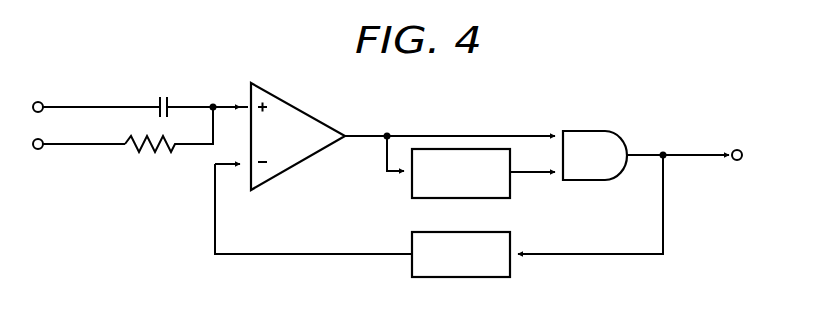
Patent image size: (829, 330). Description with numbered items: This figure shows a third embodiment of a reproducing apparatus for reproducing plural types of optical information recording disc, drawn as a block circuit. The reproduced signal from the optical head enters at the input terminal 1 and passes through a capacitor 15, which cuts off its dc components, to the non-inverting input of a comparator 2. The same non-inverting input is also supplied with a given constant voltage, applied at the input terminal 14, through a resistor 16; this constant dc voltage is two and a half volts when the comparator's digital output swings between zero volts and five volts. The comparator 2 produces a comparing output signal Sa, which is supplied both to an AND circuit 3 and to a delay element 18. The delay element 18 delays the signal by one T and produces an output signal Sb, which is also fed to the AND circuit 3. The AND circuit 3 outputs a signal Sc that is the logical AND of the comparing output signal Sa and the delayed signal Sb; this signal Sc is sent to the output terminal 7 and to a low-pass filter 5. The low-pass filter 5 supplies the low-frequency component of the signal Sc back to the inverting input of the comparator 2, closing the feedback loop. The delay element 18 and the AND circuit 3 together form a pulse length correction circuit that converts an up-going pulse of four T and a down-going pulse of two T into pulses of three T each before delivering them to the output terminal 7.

The input terminal 1 is at (38, 101).
The input terminal 14 is at (38, 150).
The capacitor 15 is at (163, 96).
The resistor 16 is at (152, 155).
The comparator 2 is at (300, 104).
The delay element 18 is at (412, 198).
The AND circuit 3 is at (577, 130).
The low-pass filter 5 is at (501, 278).
The output terminal 7 is at (735, 148).
The comparing output signal Sa is at (413, 125).
The output signal of delay element Sb is at (544, 185).
The output signal of AND circuit Sc is at (644, 140).